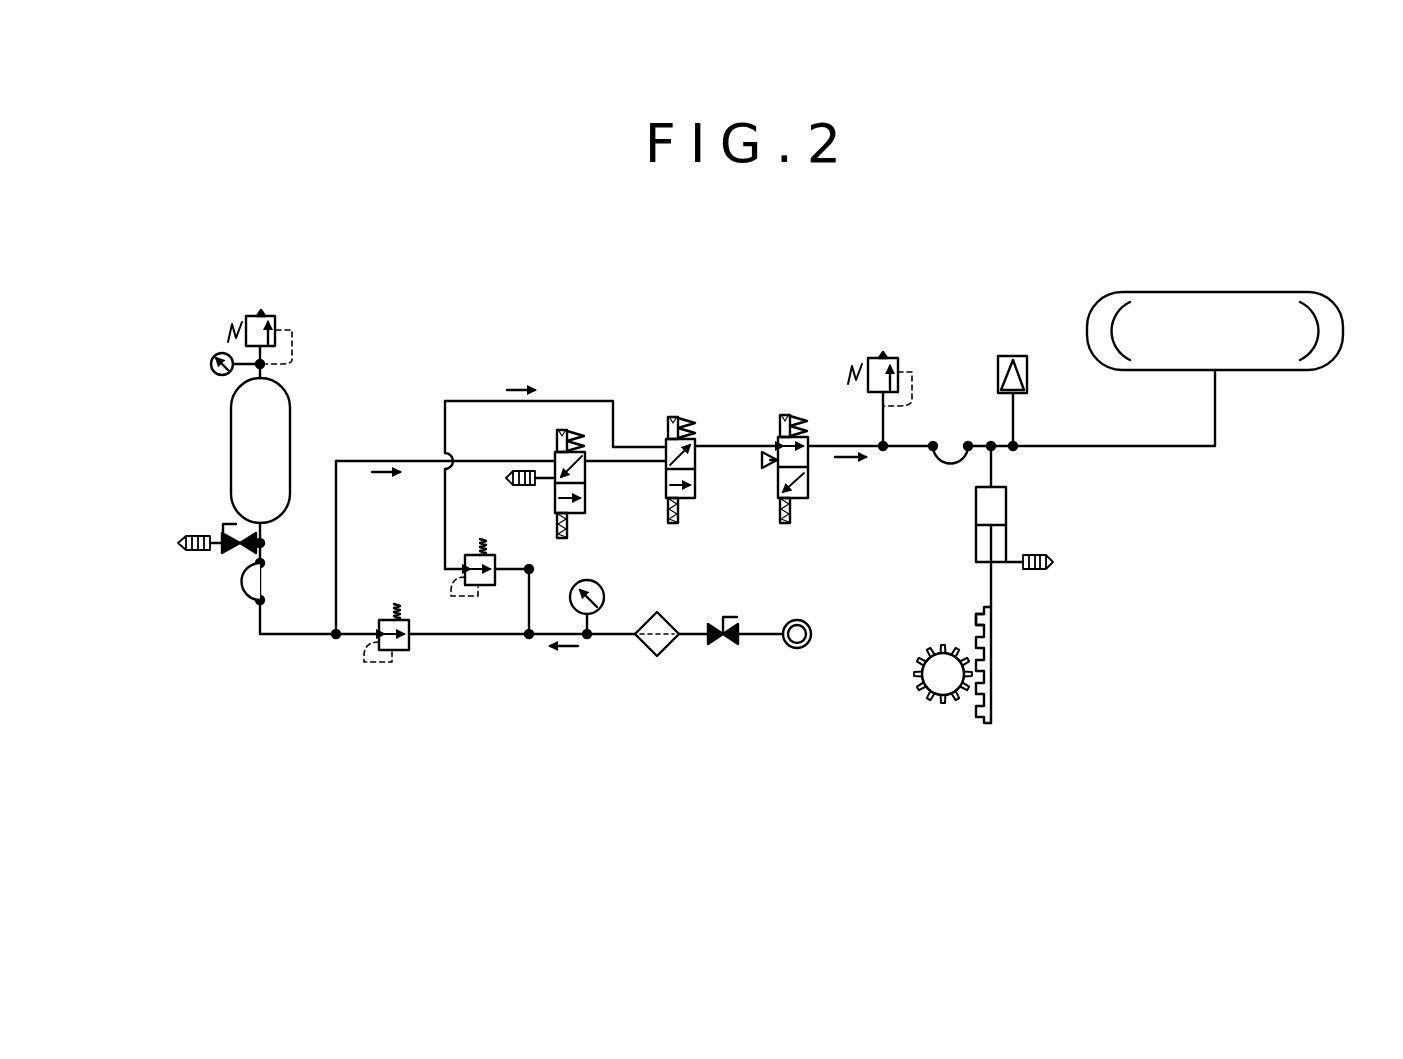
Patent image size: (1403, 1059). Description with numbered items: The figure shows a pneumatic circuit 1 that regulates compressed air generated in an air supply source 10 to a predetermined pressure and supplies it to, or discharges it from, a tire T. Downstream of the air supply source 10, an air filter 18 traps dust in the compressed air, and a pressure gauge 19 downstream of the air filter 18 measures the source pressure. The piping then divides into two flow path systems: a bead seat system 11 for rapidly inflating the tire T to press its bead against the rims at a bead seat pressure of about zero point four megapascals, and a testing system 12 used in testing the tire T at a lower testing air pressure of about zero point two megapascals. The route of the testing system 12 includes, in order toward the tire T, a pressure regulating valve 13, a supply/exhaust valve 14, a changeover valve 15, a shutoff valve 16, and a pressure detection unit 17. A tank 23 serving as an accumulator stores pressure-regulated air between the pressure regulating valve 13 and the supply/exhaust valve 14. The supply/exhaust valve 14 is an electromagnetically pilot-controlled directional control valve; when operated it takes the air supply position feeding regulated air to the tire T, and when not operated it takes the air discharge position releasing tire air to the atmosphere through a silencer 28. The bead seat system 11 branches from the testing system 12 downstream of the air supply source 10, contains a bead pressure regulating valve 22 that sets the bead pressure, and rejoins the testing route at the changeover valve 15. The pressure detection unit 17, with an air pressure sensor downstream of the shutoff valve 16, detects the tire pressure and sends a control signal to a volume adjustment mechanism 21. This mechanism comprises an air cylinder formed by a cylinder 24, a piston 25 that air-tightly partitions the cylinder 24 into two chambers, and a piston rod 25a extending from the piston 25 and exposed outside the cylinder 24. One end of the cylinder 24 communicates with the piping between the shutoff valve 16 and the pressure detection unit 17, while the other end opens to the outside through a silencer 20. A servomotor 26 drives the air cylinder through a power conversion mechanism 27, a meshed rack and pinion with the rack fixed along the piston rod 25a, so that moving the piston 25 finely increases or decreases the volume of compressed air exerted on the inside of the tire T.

The pneumatic circuit 1 is at (866, 276).
The air supply source 10 is at (797, 619).
The bead seat system 11 is at (457, 400).
The testing system 12 is at (358, 460).
The pressure regulating valve 13 is at (409, 645).
The supply/exhaust valve 14 is at (587, 506).
The changeover valve 15 is at (664, 438).
The shutoff valve 16 is at (777, 440).
The pressure detection unit 17 is at (990, 354).
The air filter 18 is at (662, 652).
The pressure gauge 19 is at (604, 591).
The silencer 20 is at (1042, 572).
The volume adjustment mechanism 21 is at (1017, 688).
The bead pressure regulating valve 22 is at (496, 560).
The tank 23 is at (231, 420).
The cylinder 24 is at (1006, 497).
The piston 25 is at (976, 521).
The piston rod 25a is at (990, 590).
The servomotor 26 is at (941, 706).
The power conversion mechanism 27 is at (980, 738).
The silencer 28 is at (520, 482).
The tire T is at (1328, 292).